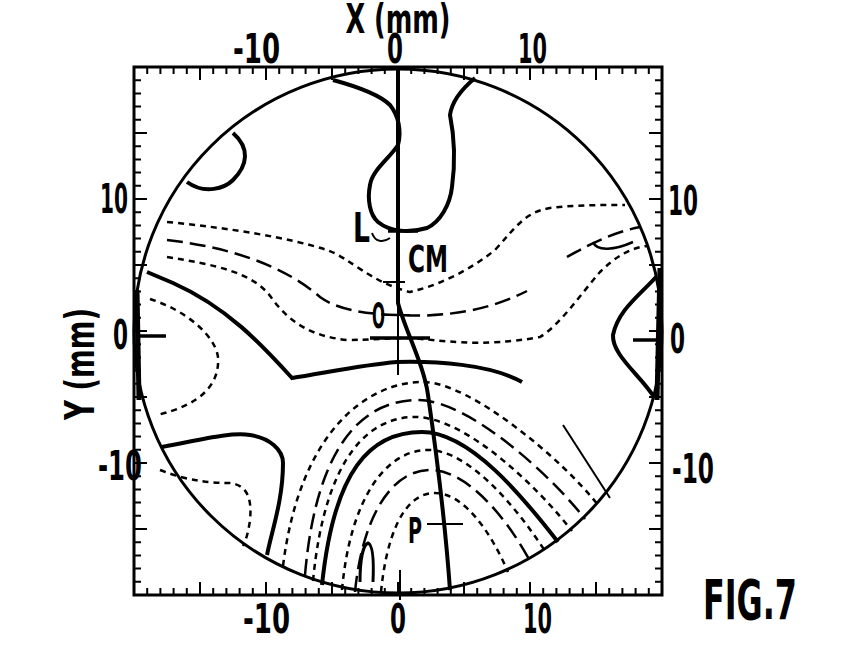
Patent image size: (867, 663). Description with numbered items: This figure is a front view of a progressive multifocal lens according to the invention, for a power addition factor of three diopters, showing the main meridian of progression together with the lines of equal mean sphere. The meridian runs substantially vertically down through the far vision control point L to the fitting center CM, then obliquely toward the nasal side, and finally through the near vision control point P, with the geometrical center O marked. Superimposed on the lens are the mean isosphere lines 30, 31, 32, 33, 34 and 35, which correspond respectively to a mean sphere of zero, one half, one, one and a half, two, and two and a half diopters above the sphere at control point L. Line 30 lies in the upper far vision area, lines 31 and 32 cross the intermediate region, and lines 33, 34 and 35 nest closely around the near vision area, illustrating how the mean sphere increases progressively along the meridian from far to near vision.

The mean isosphere line 30 is at (368, 93).
The mean isosphere line 31 is at (645, 240).
The mean isosphere line 32 is at (568, 437).
The mean isosphere line 33 is at (567, 508).
The mean isosphere line 34 is at (553, 532).
The mean isosphere line 35 is at (358, 597).